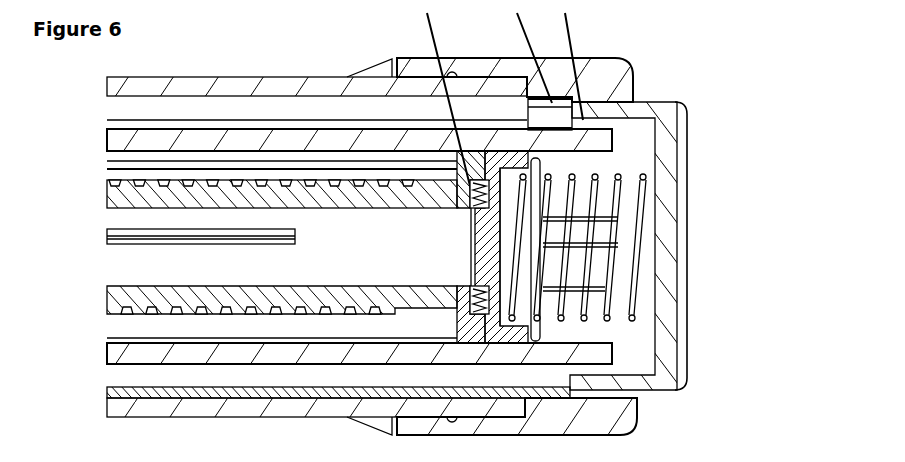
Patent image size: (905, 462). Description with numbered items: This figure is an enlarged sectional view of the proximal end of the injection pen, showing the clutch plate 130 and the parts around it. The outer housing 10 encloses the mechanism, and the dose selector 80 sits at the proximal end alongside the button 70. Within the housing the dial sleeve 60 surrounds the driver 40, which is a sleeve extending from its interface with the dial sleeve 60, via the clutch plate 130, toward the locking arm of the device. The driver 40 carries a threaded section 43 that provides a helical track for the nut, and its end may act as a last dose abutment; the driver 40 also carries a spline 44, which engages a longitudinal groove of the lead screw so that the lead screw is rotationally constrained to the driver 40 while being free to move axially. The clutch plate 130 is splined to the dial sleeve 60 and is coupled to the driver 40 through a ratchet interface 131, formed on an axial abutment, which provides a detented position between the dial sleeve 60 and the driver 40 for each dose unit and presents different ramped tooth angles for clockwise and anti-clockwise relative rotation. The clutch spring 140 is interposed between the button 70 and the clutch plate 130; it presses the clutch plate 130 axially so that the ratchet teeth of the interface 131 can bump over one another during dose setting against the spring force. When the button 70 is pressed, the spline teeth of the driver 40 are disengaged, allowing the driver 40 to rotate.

The housing 10 is at (118, 85).
The dial sleeve 60 is at (118, 138).
The threaded section 43 is at (225, 182).
The spline 44 is at (132, 244).
The driver 40 is at (120, 294).
The dose selector 80 is at (628, 80).
The button 70 is at (667, 147).
The clutch spring 140 is at (640, 216).
The clutch plate 130 is at (490, 249).
The ratchet interface 131 is at (495, 298).